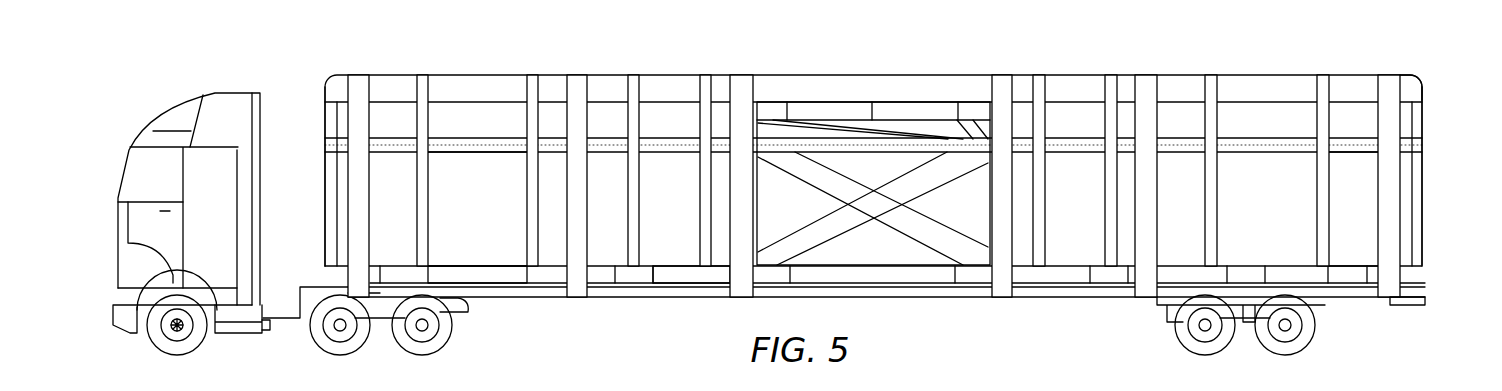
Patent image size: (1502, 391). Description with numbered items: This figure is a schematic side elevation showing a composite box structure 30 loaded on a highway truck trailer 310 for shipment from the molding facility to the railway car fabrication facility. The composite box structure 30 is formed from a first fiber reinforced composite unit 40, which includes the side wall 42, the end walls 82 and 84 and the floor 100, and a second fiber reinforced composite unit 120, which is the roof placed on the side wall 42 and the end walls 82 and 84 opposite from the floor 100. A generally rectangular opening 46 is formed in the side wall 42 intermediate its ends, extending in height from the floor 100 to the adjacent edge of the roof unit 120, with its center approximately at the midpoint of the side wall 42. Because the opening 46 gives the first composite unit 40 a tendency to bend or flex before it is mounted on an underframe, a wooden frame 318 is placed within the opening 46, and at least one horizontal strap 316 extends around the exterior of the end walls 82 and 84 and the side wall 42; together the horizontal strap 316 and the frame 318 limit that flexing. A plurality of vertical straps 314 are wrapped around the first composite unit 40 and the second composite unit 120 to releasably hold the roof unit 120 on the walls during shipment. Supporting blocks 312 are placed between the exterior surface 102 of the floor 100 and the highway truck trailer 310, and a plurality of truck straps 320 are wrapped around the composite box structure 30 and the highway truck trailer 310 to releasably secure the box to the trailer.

The composite box structure 30 is at (913, 52).
The first fiber reinforced composite unit 40 is at (1350, 250).
The side wall 42 is at (489, 197).
The opening 46 is at (800, 204).
The end wall 82 is at (1436, 167).
The end wall 84 is at (316, 168).
The floor 100 is at (684, 272).
The exterior surface 102 is at (458, 278).
The second fiber reinforced composite unit 120 is at (1350, 70).
The highway truck trailer 310 is at (1072, 300).
The supporting blocks 312 is at (606, 283).
The vertical straps 314 is at (423, 80).
The horizontal strap 316 is at (486, 150).
The wooden frame 318 is at (815, 108).
The truck straps 320 is at (358, 80).